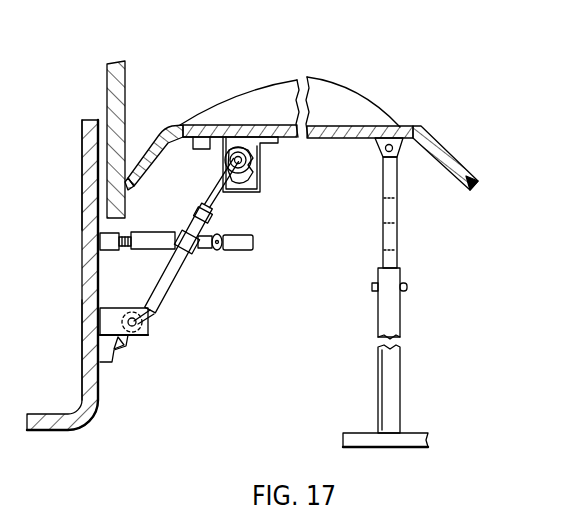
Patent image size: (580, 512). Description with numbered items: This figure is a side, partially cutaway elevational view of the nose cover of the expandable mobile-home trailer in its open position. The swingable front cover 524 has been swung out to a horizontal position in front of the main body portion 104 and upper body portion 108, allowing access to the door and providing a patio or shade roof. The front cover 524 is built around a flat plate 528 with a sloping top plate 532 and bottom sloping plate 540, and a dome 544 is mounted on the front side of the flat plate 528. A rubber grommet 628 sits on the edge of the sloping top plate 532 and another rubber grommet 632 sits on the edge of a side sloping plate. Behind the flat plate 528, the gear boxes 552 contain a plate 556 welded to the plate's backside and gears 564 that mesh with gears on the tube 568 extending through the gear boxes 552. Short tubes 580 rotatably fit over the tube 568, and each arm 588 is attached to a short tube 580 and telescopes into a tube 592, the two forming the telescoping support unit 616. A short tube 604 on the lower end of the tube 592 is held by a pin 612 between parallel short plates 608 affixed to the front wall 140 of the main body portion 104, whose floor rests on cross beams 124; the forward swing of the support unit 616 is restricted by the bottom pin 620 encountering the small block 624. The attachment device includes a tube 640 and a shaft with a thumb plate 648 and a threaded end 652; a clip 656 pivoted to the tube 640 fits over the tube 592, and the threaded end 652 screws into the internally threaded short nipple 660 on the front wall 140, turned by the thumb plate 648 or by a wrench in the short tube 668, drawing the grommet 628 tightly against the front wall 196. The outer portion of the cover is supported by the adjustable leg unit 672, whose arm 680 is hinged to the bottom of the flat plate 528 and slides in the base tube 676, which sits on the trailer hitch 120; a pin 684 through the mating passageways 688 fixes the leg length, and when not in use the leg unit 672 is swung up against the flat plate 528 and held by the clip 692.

The main body portion 104 is at (57, 434).
The upper body portion 108 is at (96, 116).
The trailer hitch 120 is at (360, 440).
The cross beams 124 is at (9, 386).
The front wall 140 is at (92, 363).
The front wall 196 is at (115, 90).
The swingable front cover 524 is at (221, 85).
The flat plate 528 is at (333, 130).
The sloping top plate 532 is at (147, 158).
The bottom sloping plate 540 is at (440, 143).
The dome 544 is at (320, 80).
The gear boxes 552 is at (263, 187).
The plate 556 is at (265, 136).
The gears 564 is at (262, 167).
The tube 568 is at (226, 163).
The short tubes 580 is at (234, 147).
The arm 588 is at (218, 200).
The tube 592 is at (154, 296).
The short tube 604 is at (135, 336).
The short plates 608 is at (108, 323).
The pin 612 is at (128, 331).
The telescoping support unit 616 is at (167, 290).
The pin 620 is at (125, 346).
The block 624 is at (113, 346).
The rubber grommet 628 is at (126, 182).
The rubber grommet 632 is at (475, 183).
The tube 640 is at (199, 252).
The thumb plate 648 is at (215, 250).
The threaded end 652 is at (124, 242).
The clip 656 is at (168, 256).
The short nipple 660 is at (114, 247).
The short tube 668 is at (250, 234).
The adjustable leg unit 672 is at (402, 398).
The base tube 676 is at (388, 400).
The arm 680 is at (397, 180).
The pin 684 is at (407, 287).
The mating passageways 688 is at (397, 238).
The clip 692 is at (186, 123).